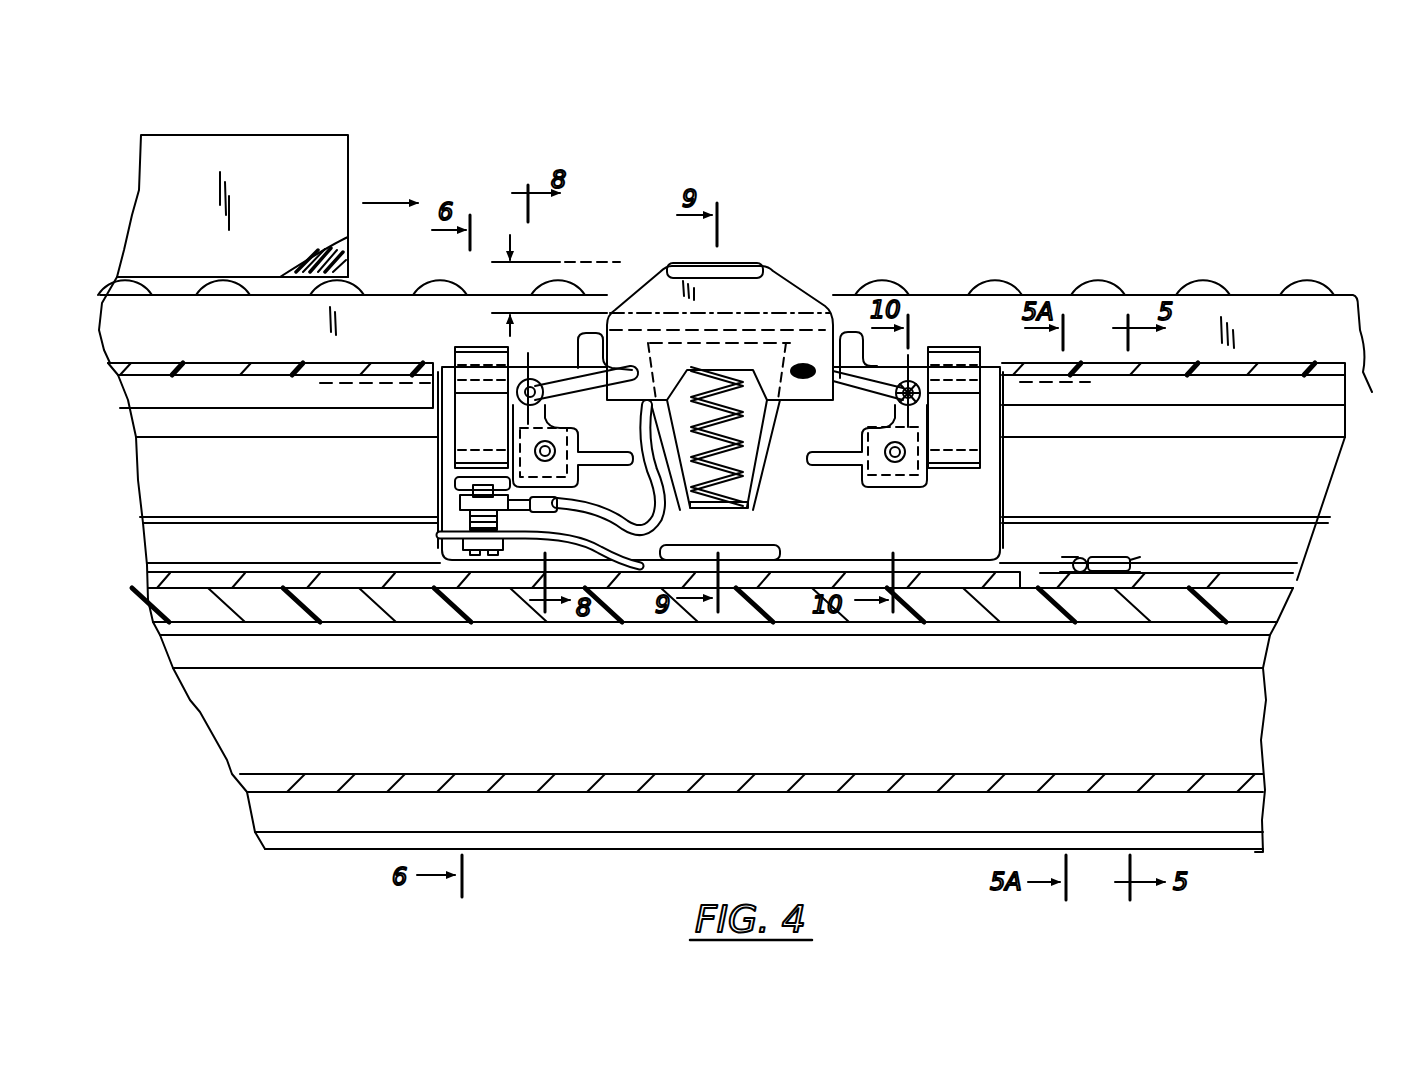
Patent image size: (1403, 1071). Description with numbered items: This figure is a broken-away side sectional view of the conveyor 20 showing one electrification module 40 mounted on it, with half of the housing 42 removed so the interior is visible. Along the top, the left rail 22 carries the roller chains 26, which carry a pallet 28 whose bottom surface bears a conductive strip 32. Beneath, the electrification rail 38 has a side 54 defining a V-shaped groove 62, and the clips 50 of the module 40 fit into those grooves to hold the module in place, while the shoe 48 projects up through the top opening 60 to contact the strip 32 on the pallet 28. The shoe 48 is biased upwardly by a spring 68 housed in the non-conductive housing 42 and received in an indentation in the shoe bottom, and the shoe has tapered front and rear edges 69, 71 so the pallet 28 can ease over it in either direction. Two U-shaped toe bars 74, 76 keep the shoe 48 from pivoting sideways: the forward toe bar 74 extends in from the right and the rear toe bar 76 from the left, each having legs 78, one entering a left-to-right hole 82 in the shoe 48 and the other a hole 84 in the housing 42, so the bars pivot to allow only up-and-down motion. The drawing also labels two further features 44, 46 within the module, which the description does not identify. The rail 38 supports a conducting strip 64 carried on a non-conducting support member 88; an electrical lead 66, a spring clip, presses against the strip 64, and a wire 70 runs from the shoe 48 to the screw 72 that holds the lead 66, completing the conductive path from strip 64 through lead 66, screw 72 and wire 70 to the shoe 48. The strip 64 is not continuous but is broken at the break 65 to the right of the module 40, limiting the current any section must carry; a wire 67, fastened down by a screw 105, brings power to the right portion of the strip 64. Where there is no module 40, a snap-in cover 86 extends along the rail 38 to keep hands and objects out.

The conveyor 20 is at (1118, 188).
The left rail 22 is at (1253, 305).
The roller chains 26 is at (1103, 283).
The pallet 28 is at (348, 136).
The conductive strip 32 is at (355, 274).
The electrification rail 38 is at (1282, 498).
The electrification module 40 is at (808, 170).
The housing 42 is at (838, 552).
The mounting holes 44 is at (556, 456).
The retaining clip 46 is at (850, 330).
The shoe 48 is at (770, 276).
The clips 50 is at (460, 353).
The side 54 is at (244, 490).
The top opening 60 is at (1330, 423).
The V-shaped groove 62 is at (151, 421).
The conducting strip 64 is at (273, 580).
The break 65 is at (1036, 581).
The electrical lead 66 is at (641, 566).
The wire 67 is at (1130, 561).
The spring 68 is at (746, 471).
The tapered front edge 69 is at (660, 272).
The wire 70 is at (617, 526).
The tapered rear edge 71 is at (797, 272).
The screw 72 is at (440, 549).
The forward toe bar 74 is at (576, 399).
The rear toe bar 76 is at (865, 388).
The legs 78 is at (801, 422).
The hole 82 is at (649, 373).
The hole 84 is at (534, 386).
The snap-in cover 86 is at (1273, 362).
The support member 88 is at (152, 600).
The screw 105 is at (1080, 559).